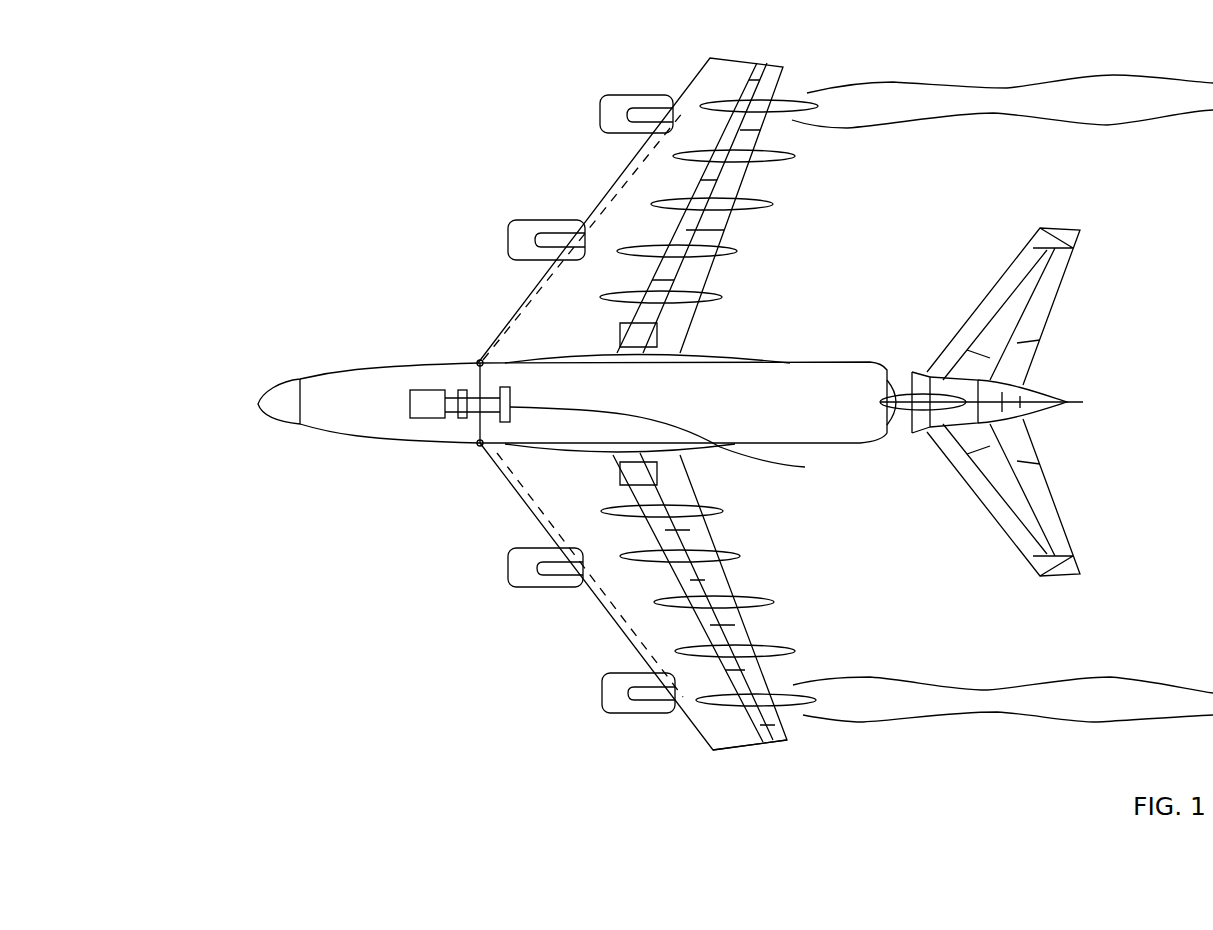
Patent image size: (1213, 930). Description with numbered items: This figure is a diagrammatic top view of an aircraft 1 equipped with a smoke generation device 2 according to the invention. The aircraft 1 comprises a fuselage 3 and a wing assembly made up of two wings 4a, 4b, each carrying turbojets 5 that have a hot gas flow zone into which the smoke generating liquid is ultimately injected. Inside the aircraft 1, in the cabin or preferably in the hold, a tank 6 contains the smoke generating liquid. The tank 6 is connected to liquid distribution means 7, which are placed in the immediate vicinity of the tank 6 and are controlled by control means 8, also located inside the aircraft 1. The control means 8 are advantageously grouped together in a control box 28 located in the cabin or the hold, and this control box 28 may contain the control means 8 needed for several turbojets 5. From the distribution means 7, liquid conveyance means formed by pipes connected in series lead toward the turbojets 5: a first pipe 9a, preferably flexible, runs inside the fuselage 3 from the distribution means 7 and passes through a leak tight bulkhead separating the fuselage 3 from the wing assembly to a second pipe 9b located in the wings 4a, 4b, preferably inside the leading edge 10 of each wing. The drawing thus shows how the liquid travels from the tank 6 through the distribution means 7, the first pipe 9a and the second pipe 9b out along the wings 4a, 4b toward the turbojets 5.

The aircraft 1 is at (262, 476).
The smoke generation device 2 is at (927, 122).
The fuselage 3 is at (780, 362).
The wing 4a is at (607, 198).
The wing 4b is at (500, 478).
The turbojet 5 is at (603, 98).
The tank 6 is at (423, 390).
The liquid distribution means 7 is at (462, 390).
The control means 8 is at (513, 395).
The first pipe 9a is at (477, 434).
The second pipe 9b is at (628, 157).
The leading edge 10 is at (703, 742).
The control box 28 is at (679, 446).